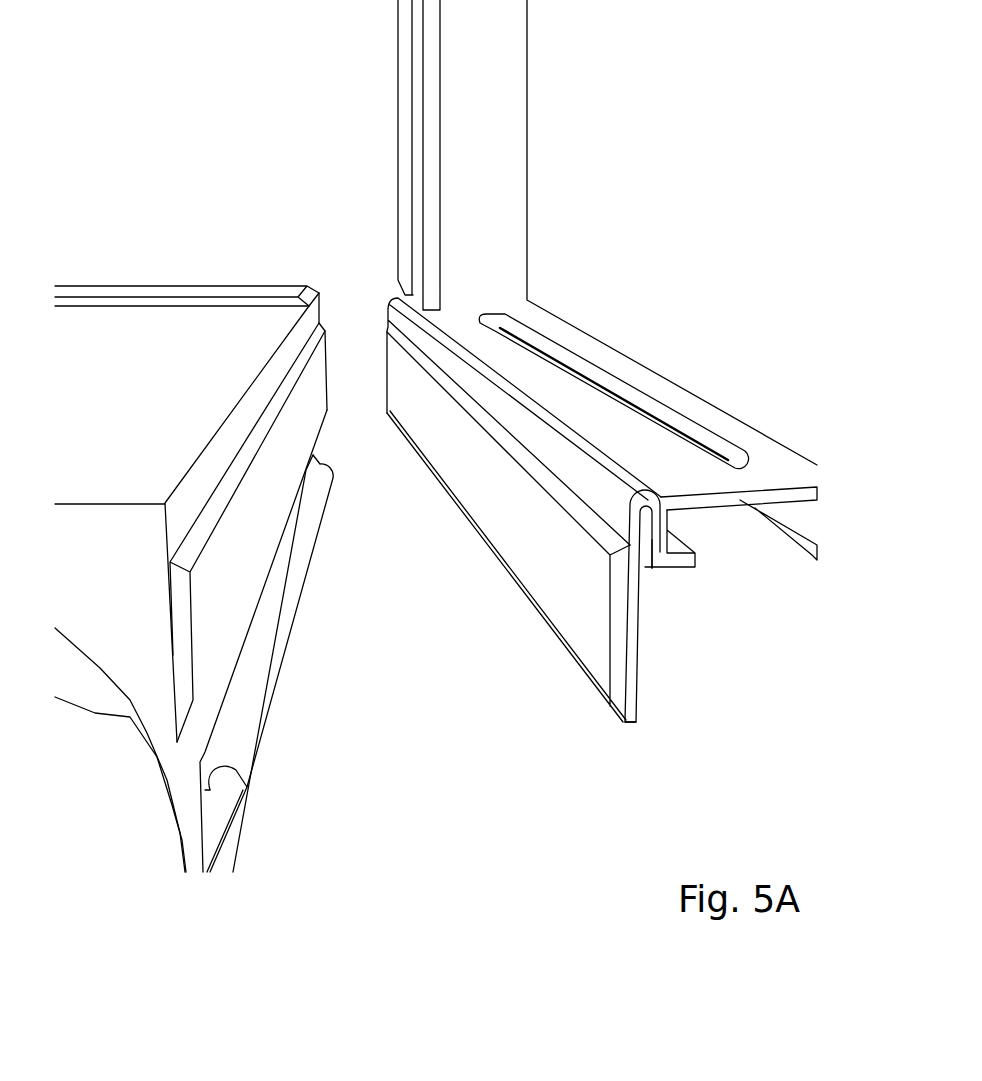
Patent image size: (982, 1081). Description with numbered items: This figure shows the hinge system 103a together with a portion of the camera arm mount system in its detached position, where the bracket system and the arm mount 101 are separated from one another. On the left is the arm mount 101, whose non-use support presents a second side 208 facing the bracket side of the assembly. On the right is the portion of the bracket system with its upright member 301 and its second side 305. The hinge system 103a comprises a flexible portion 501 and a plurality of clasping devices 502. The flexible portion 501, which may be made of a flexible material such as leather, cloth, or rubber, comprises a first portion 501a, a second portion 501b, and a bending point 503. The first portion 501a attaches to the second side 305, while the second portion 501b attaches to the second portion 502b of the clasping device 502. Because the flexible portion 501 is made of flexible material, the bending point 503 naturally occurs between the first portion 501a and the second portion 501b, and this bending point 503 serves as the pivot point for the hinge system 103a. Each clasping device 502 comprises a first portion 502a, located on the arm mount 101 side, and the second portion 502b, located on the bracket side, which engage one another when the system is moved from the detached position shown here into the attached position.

The arm mount 101 is at (78, 348).
The hinge system 103a is at (282, 127).
The second side 208 is at (264, 376).
The frame post 301 is at (524, 193).
The second side 305 is at (444, 319).
The flexible portion 501 is at (637, 620).
The first portion 501a is at (662, 564).
The second portion 501b is at (645, 733).
The clasping devices 502 is at (449, 834).
The first portion 502a is at (224, 620).
The second portion 502b is at (571, 635).
The bending point 503 is at (521, 377).